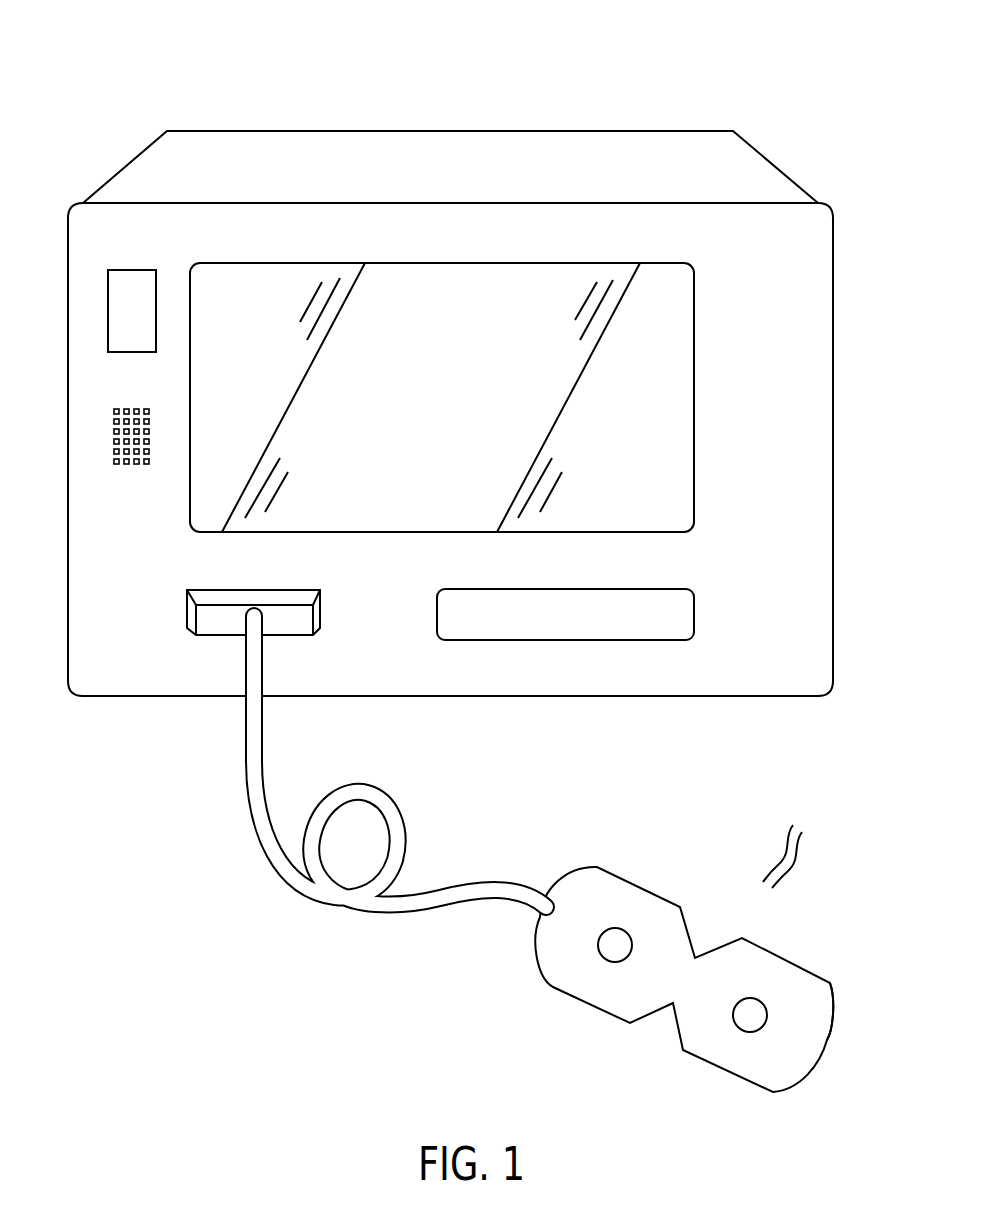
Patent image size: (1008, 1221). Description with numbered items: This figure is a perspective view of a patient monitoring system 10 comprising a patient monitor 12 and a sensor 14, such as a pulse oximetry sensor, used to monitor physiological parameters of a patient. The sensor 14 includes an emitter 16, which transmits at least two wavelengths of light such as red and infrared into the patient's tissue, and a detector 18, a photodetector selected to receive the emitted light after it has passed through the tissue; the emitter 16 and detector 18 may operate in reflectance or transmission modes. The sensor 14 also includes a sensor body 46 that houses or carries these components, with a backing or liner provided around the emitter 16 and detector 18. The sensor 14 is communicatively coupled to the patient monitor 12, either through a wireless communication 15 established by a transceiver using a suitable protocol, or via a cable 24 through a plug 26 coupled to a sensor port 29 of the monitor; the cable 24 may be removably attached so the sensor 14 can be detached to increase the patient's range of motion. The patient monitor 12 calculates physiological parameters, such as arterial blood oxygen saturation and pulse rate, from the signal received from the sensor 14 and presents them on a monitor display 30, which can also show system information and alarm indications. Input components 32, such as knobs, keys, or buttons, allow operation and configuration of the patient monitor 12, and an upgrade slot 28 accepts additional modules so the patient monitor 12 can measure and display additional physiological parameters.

The patient monitoring system 10 is at (84, 70).
The patient monitor 12 is at (833, 243).
The sensor 14 is at (602, 855).
The wireless communication 15 is at (795, 858).
The emitter 16 is at (618, 928).
The detector 18 is at (767, 1010).
The cable 24 is at (466, 880).
The plug 26 is at (300, 618).
The upgrade slot 28 is at (694, 615).
The sensor port 29 is at (187, 611).
The monitor display 30 is at (695, 340).
The input components 32 is at (108, 283).
The sensor body 46 is at (828, 1037).